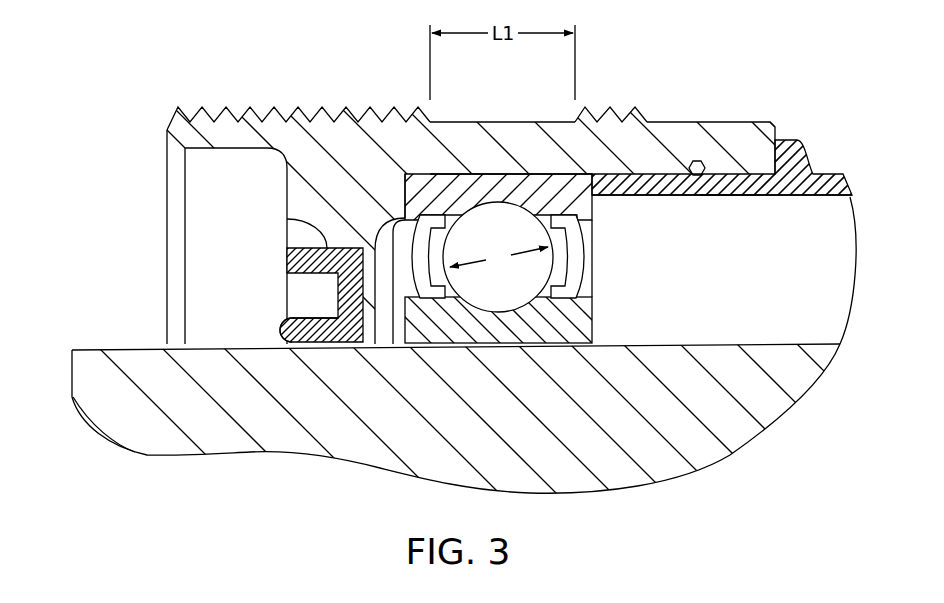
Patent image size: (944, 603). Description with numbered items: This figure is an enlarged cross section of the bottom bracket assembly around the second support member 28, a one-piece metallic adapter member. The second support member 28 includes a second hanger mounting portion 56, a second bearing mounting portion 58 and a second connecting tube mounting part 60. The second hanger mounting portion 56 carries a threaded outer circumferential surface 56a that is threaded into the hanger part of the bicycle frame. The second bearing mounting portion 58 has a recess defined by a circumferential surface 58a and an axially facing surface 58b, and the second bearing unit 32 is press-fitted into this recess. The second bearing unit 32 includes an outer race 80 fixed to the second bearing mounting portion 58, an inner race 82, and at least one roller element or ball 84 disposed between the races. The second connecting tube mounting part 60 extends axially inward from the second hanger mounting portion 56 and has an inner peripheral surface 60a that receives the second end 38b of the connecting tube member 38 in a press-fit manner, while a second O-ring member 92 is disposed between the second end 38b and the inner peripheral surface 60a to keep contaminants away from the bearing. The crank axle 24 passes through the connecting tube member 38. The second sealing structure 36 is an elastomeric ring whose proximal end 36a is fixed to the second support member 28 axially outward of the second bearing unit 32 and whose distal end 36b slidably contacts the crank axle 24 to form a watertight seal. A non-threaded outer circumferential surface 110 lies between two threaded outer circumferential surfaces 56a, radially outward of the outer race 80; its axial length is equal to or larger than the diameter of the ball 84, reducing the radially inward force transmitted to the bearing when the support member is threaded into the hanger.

The crank axle 24 is at (66, 358).
The second support member 28 is at (164, 174).
The second bearing unit 32 is at (598, 310).
The second sealing structure 36 is at (321, 272).
The proximal end 36a is at (290, 215).
The distal end 36b is at (283, 323).
The connecting tube member 38 is at (727, 177).
The second end 38b is at (600, 198).
The second hanger mounting portion 56 is at (555, 190).
The threaded outer circumferential surface 56a is at (297, 110).
The second bearing mounting portion 58 is at (459, 251).
The circumferential surface 58a is at (537, 173).
The axially facing surface 58b is at (405, 192).
The second connecting tube mounting part 60 is at (778, 126).
The inner peripheral surface 60a is at (731, 196).
The outer race 80 is at (377, 345).
The inner race 82 is at (523, 328).
The roller element or ball 84 is at (488, 289).
The second O-ring member 92 is at (700, 161).
The non-threaded outer circumferential surface 110 is at (465, 122).